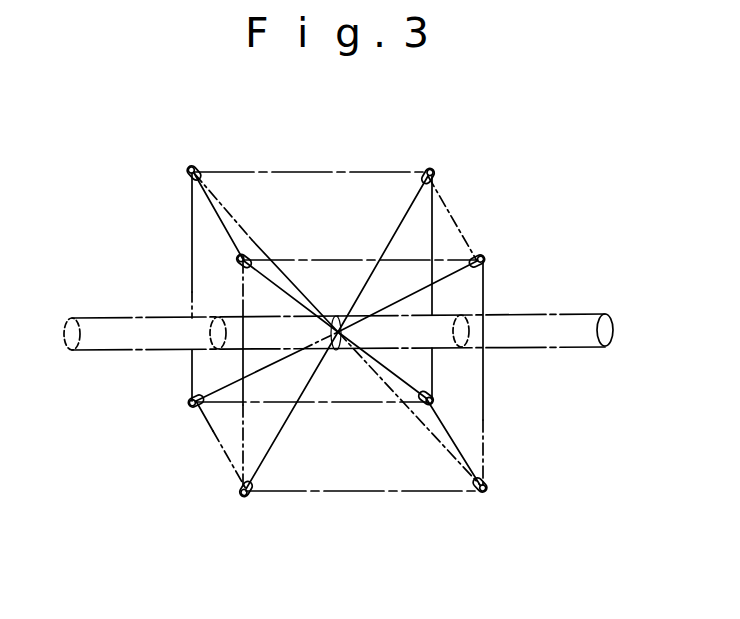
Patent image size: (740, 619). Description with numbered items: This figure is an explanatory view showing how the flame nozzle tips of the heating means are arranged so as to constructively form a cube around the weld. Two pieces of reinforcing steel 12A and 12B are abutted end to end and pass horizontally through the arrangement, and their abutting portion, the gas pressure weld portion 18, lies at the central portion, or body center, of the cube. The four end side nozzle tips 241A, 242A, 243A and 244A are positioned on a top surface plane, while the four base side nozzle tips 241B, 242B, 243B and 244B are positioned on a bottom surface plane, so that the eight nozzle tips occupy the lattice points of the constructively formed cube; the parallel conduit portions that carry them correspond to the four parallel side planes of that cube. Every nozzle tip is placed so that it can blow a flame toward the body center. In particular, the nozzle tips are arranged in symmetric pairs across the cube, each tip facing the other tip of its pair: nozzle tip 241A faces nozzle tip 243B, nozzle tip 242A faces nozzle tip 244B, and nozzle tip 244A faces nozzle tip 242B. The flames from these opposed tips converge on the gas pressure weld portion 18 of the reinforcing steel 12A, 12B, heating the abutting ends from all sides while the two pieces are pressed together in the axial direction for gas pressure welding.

The reinforcing steel 12A is at (108, 318).
The reinforcing steel 12B is at (577, 322).
The gas welding site 18 is at (337, 355).
The end side nozzle tip 243A is at (261, 207).
The end side nozzle tip 242A is at (395, 207).
The end side nozzle tip 244A is at (286, 257).
The end side nozzle tip 241A is at (451, 256).
The base side nozzle tip 243B is at (205, 370).
The base side nozzle tip 242B is at (454, 369).
The base side nozzle tip 244B is at (288, 456).
The base side nozzle tip 241B is at (415, 455).